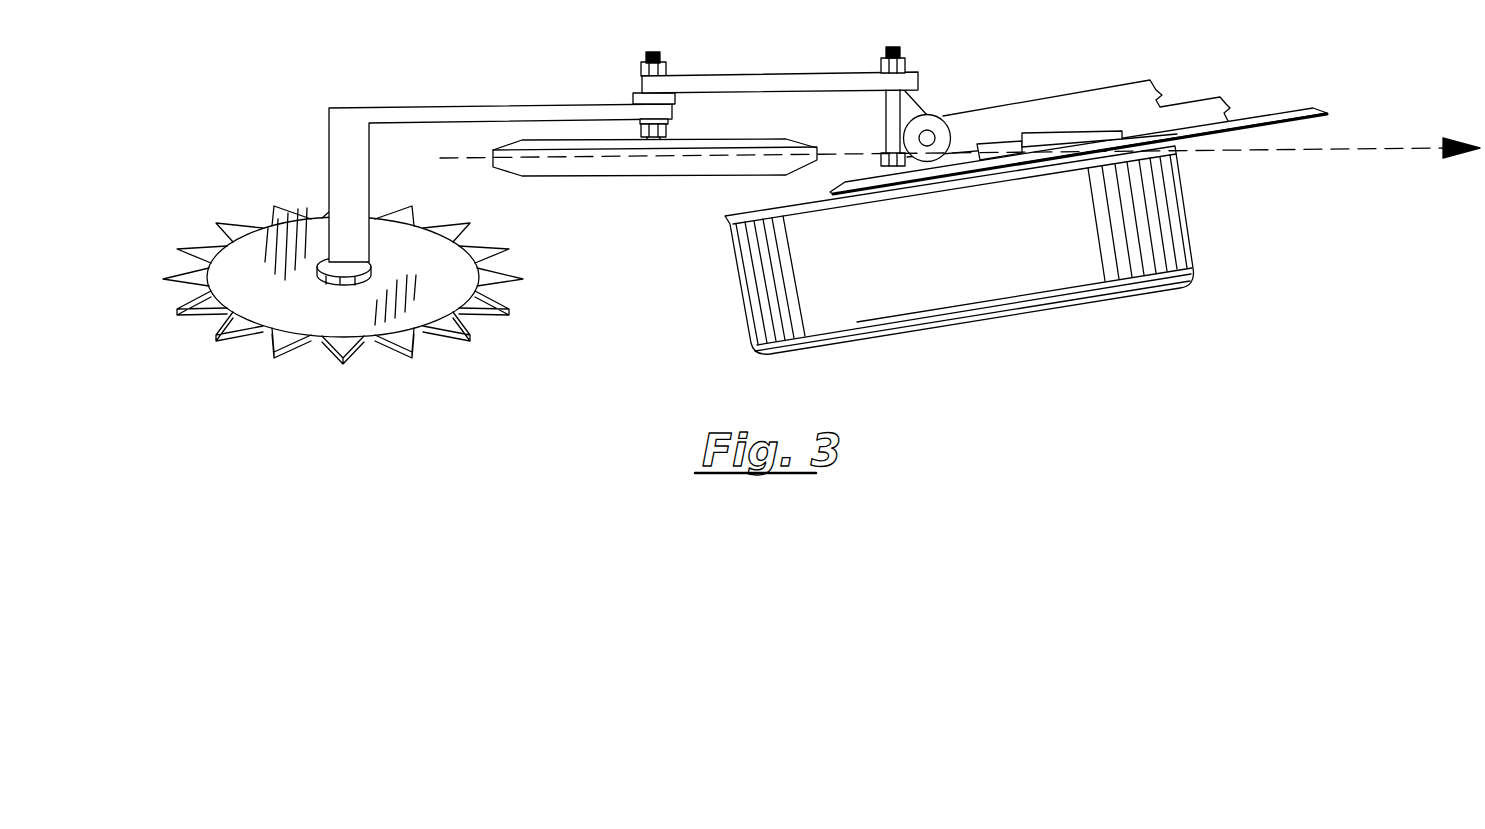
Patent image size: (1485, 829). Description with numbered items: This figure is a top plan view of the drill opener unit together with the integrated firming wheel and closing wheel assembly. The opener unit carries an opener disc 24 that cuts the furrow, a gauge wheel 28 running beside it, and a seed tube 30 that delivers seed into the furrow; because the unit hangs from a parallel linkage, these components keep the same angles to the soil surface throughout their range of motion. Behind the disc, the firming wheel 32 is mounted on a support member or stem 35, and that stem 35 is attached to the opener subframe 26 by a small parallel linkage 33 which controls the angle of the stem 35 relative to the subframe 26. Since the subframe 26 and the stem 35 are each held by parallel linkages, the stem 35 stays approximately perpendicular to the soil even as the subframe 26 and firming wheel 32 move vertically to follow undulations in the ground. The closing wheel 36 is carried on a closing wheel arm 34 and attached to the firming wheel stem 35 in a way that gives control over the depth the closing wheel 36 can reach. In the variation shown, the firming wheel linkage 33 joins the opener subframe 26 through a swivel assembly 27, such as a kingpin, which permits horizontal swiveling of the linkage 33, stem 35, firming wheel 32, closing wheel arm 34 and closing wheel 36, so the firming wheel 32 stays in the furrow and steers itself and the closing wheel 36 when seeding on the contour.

The opener disc 24 is at (1283, 120).
The opener subframe 26 is at (1013, 125).
The swivel assembly 27 is at (933, 130).
The gauge wheel 28 is at (948, 267).
The seed tube 30 is at (1073, 142).
The firming wheel 32 is at (633, 162).
The small parallel linkage 33 is at (762, 82).
The closing wheel arm 34 is at (390, 118).
The firming wheel stem 35 is at (635, 98).
The closing wheel 36 is at (252, 248).